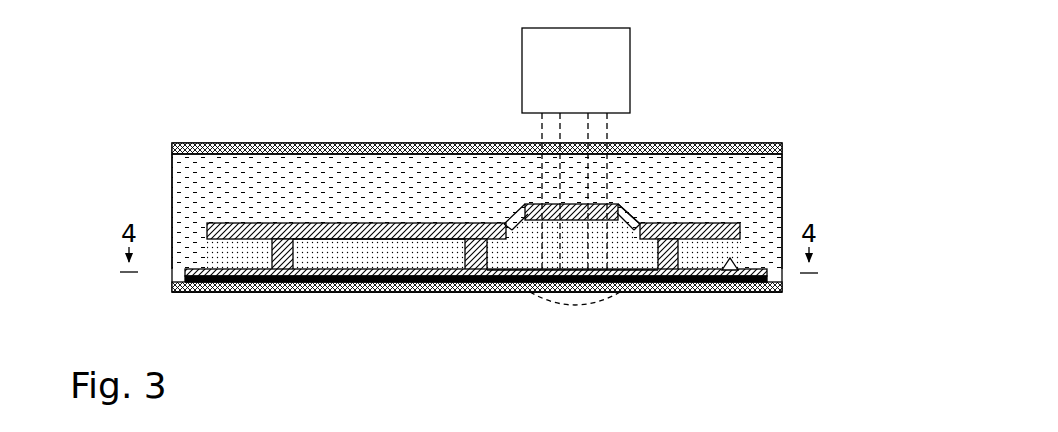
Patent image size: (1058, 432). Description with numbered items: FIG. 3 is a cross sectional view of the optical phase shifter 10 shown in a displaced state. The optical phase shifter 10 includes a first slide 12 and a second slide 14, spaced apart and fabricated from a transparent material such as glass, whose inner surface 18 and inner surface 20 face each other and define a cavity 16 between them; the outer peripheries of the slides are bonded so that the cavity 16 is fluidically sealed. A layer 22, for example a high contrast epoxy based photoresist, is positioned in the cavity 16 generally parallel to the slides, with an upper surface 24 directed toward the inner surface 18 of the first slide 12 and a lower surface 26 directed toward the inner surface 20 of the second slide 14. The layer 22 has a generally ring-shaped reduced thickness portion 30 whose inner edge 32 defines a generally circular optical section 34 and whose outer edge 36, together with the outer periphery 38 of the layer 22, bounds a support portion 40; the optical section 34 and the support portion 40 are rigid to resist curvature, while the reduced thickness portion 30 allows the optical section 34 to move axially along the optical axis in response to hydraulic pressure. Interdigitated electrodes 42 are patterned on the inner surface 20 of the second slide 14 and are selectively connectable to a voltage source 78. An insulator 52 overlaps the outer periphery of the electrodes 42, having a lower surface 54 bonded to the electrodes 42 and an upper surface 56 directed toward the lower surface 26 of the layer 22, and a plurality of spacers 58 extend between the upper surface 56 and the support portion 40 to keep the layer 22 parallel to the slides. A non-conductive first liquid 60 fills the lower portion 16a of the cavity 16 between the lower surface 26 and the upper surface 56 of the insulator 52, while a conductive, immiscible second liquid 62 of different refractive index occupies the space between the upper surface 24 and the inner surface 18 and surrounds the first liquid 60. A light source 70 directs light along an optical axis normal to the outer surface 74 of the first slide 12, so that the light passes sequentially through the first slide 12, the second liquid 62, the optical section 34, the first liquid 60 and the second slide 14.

The optical phase shifter 10 is at (816, 102).
The first slide 12 is at (170, 141).
The second slide 14 is at (785, 293).
The cavity 16 is at (348, 198).
The lower portion of cavity 16a is at (473, 255).
The inner surface of first slide 18 is at (264, 160).
The inner surface of second slide 20 is at (180, 275).
The layer 22 is at (188, 218).
The upper surface of layer 24 is at (413, 222).
The lower surface of layer 26 is at (361, 284).
The reduced thickness portion 30 is at (516, 214).
The inner edge 32 is at (622, 213).
The optical section 34 is at (541, 203).
The outer edge 36 is at (503, 220).
The outer periphery of layer 38 is at (773, 215).
The support portion 40 is at (437, 248).
The interdigitated electrodes 42 is at (235, 288).
The insulator 52 is at (183, 266).
The lower surface of insulator 54 is at (627, 290).
The upper surface of insulator 56 is at (737, 270).
The spacers 58 is at (291, 268).
The first liquid 60 is at (417, 256).
The second liquid 62 is at (747, 176).
The light source 70 is at (616, 30).
The outer surface of first slide 74 is at (221, 143).
The voltage source 78 is at (608, 140).